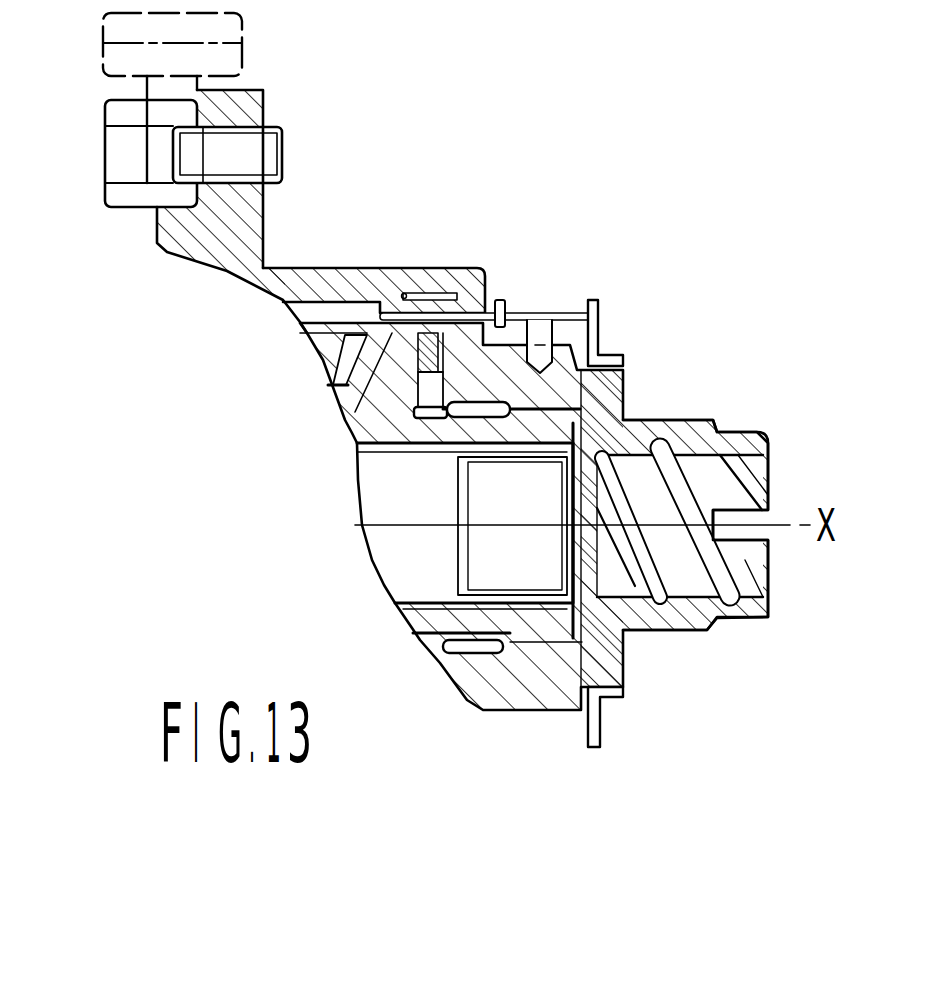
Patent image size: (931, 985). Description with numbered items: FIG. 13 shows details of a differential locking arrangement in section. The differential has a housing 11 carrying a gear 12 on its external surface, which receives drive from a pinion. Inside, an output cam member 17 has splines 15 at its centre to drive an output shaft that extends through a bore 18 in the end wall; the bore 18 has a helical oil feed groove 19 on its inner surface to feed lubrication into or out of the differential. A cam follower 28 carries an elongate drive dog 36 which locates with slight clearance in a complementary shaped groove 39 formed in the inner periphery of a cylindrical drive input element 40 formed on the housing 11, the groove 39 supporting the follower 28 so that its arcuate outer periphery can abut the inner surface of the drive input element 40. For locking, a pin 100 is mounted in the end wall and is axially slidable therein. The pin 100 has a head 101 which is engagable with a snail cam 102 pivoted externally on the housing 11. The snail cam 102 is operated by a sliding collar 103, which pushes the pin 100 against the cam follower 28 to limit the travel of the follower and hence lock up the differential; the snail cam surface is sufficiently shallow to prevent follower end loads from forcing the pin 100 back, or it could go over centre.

The housing 11 is at (227, 271).
The gear 12 is at (88, 28).
The splines 15 is at (487, 455).
The output cam member 17 is at (498, 622).
The bore 18 is at (640, 452).
The helical oil feed groove 19 is at (732, 457).
The cam follower 28 is at (325, 352).
The drive dog 36 is at (323, 318).
The groove 39 is at (365, 305).
The drive input element 40 is at (316, 318).
The pin 100 is at (456, 308).
The head 101 is at (522, 297).
The snail cam 102 is at (585, 323).
The sliding collar 103 is at (600, 727).